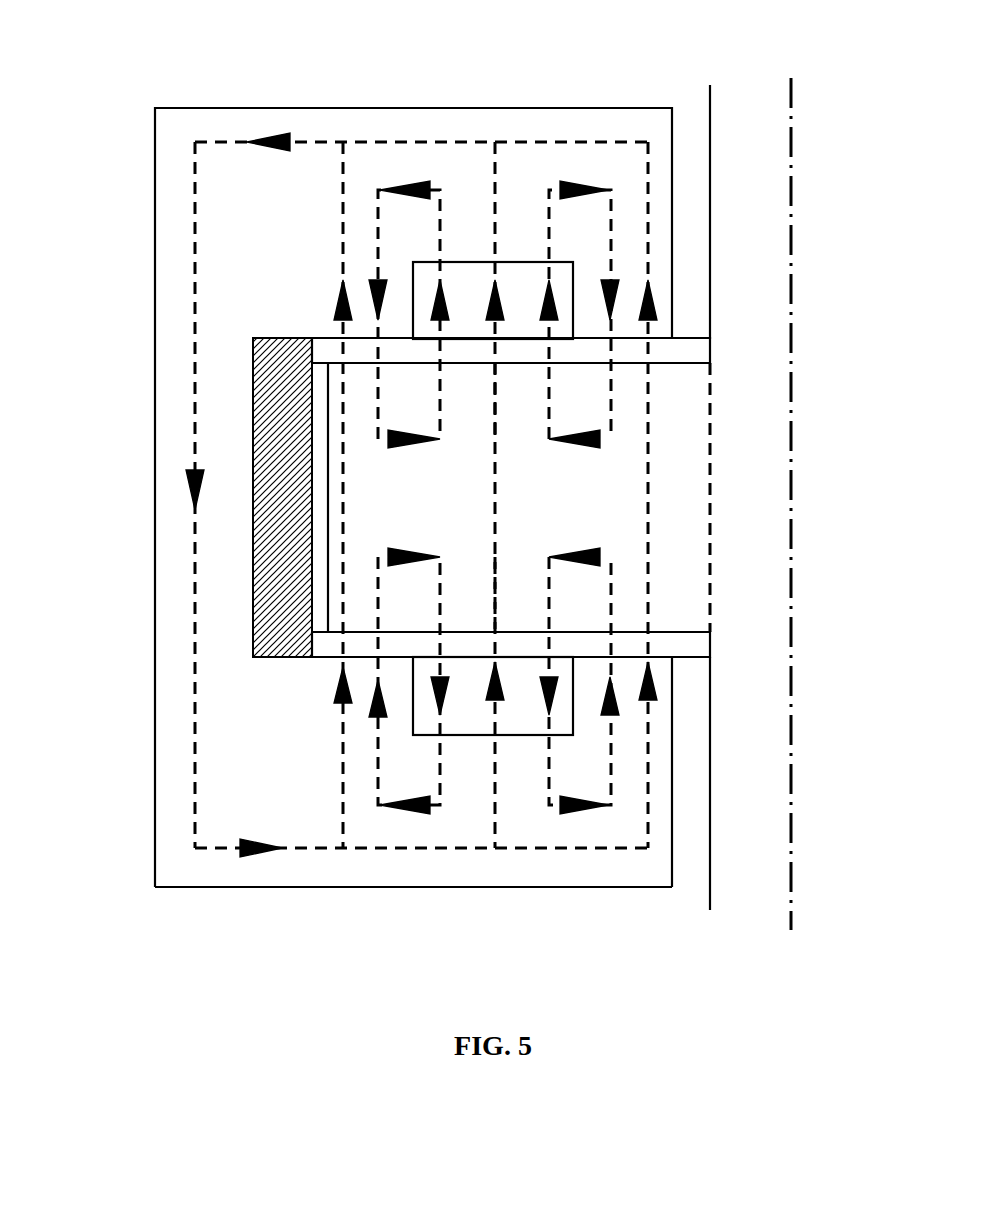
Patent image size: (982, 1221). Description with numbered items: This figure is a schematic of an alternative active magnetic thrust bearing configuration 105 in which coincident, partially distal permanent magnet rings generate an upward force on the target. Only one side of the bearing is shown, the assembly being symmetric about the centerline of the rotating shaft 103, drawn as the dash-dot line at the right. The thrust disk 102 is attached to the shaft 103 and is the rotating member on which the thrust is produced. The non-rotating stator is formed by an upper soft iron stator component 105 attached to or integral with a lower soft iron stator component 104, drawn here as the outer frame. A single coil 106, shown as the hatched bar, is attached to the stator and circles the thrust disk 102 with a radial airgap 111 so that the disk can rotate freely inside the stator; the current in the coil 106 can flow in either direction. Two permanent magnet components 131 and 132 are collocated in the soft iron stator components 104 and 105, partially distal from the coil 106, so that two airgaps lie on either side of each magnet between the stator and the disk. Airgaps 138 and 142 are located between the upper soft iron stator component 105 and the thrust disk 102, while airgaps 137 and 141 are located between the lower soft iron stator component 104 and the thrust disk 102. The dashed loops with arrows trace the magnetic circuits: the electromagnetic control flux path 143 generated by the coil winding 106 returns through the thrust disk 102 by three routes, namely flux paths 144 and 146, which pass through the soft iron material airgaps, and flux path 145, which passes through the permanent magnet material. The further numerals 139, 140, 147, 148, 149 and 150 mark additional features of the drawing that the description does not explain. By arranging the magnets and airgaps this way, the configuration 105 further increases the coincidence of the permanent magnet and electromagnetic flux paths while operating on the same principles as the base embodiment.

The thrust disk 102 is at (680, 497).
The rotating shaft 103 is at (793, 510).
The lower soft ferrous stator component 104 is at (415, 873).
The upper soft ferrous stator component 105 is at (567, 117).
The coil 106 is at (258, 597).
The radial airgap 111 is at (322, 497).
The permanent magnet component 131 is at (510, 710).
The permanent magnet component 132 is at (533, 277).
The airgap 137 is at (357, 647).
The airgap 138 is at (353, 352).
The lower gap region 139 is at (523, 637).
The upper gap region 140 is at (527, 457).
The airgap 141 is at (630, 645).
The airgap 142 is at (620, 353).
The electromagnetic control flux path 143 is at (290, 142).
The flux path 144 is at (343, 787).
The flux path 145 is at (495, 185).
The flux path 146 is at (648, 212).
The lower left magnet flux loop 147 is at (440, 593).
The upper left magnet flux loop 148 is at (440, 390).
The lower right magnet flux loop 149 is at (548, 593).
The upper right magnet flux loop 150 is at (562, 338).